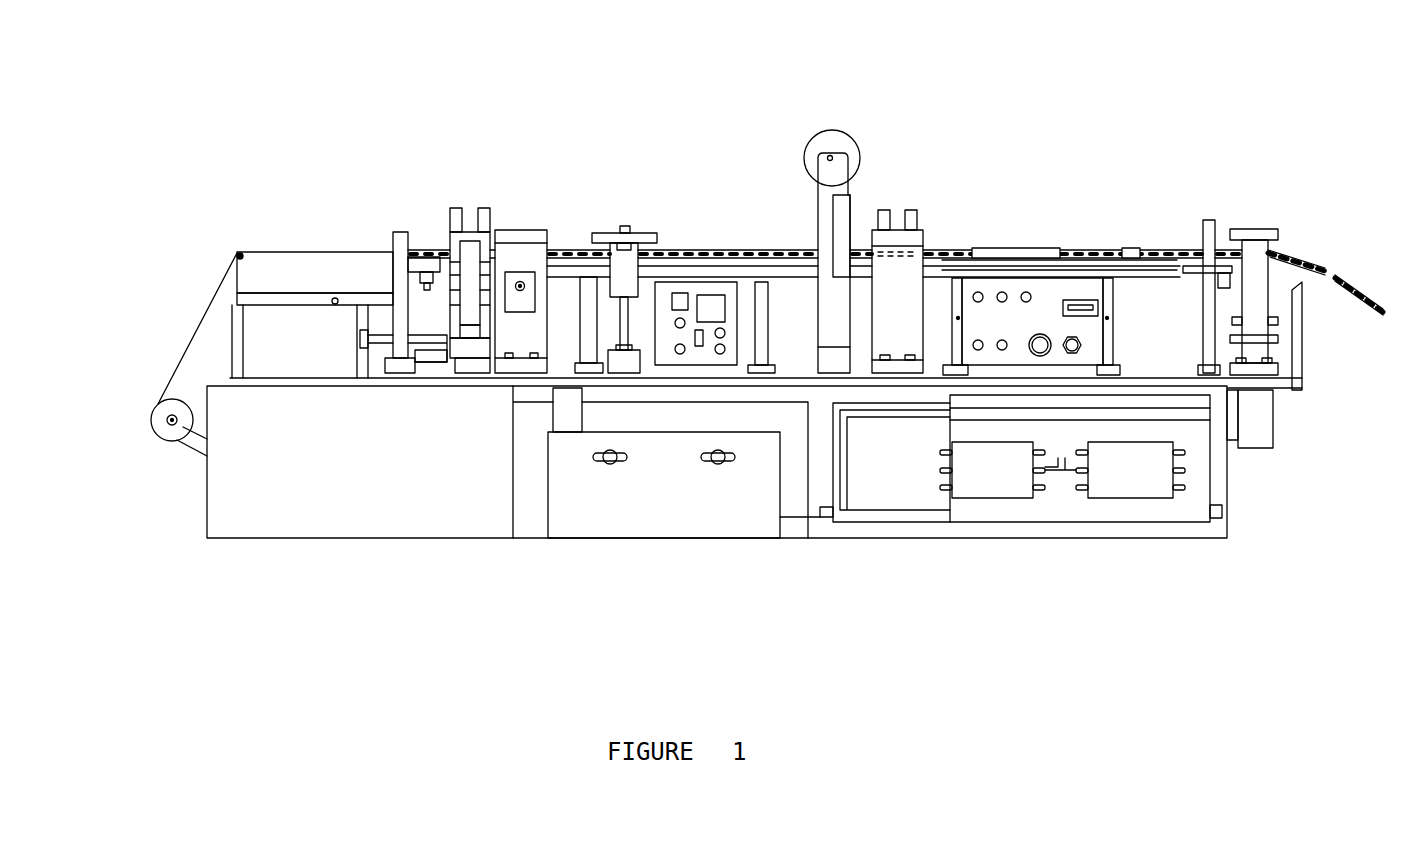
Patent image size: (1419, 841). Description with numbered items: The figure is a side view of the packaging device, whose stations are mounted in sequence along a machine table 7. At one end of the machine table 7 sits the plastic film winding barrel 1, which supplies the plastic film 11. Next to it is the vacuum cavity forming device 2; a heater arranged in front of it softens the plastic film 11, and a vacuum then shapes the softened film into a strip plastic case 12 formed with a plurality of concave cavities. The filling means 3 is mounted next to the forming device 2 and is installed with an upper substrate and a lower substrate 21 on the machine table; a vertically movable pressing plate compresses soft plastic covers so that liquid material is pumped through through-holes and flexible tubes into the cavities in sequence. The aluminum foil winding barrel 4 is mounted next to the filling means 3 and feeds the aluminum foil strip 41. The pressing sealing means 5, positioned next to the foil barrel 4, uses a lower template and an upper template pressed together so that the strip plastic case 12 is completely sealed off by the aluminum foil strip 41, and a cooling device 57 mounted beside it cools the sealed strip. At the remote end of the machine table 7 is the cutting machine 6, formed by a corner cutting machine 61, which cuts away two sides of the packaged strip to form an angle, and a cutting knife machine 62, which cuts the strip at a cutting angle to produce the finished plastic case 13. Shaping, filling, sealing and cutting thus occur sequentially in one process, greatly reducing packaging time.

The plastic film winding barrel 1 is at (167, 432).
The machine table 7 is at (218, 466).
The plastic film 11 is at (290, 251).
The aluminum foil winding barrel 4 is at (832, 138).
The lower substrate 21 is at (473, 220).
The vacuum cavity forming device 2 is at (497, 171).
The strip plastic case 12 is at (562, 240).
The filling means 3 is at (638, 240).
The aluminum foil strip 41 is at (807, 197).
The pressing sealing means 5 is at (900, 204).
The cooling device 57 is at (1022, 238).
The cutting machine 6 is at (1277, 93).
The corner cutting machine 61 is at (1203, 240).
The cutting knife machine 62 is at (1253, 230).
The plastic case 13 is at (1361, 284).